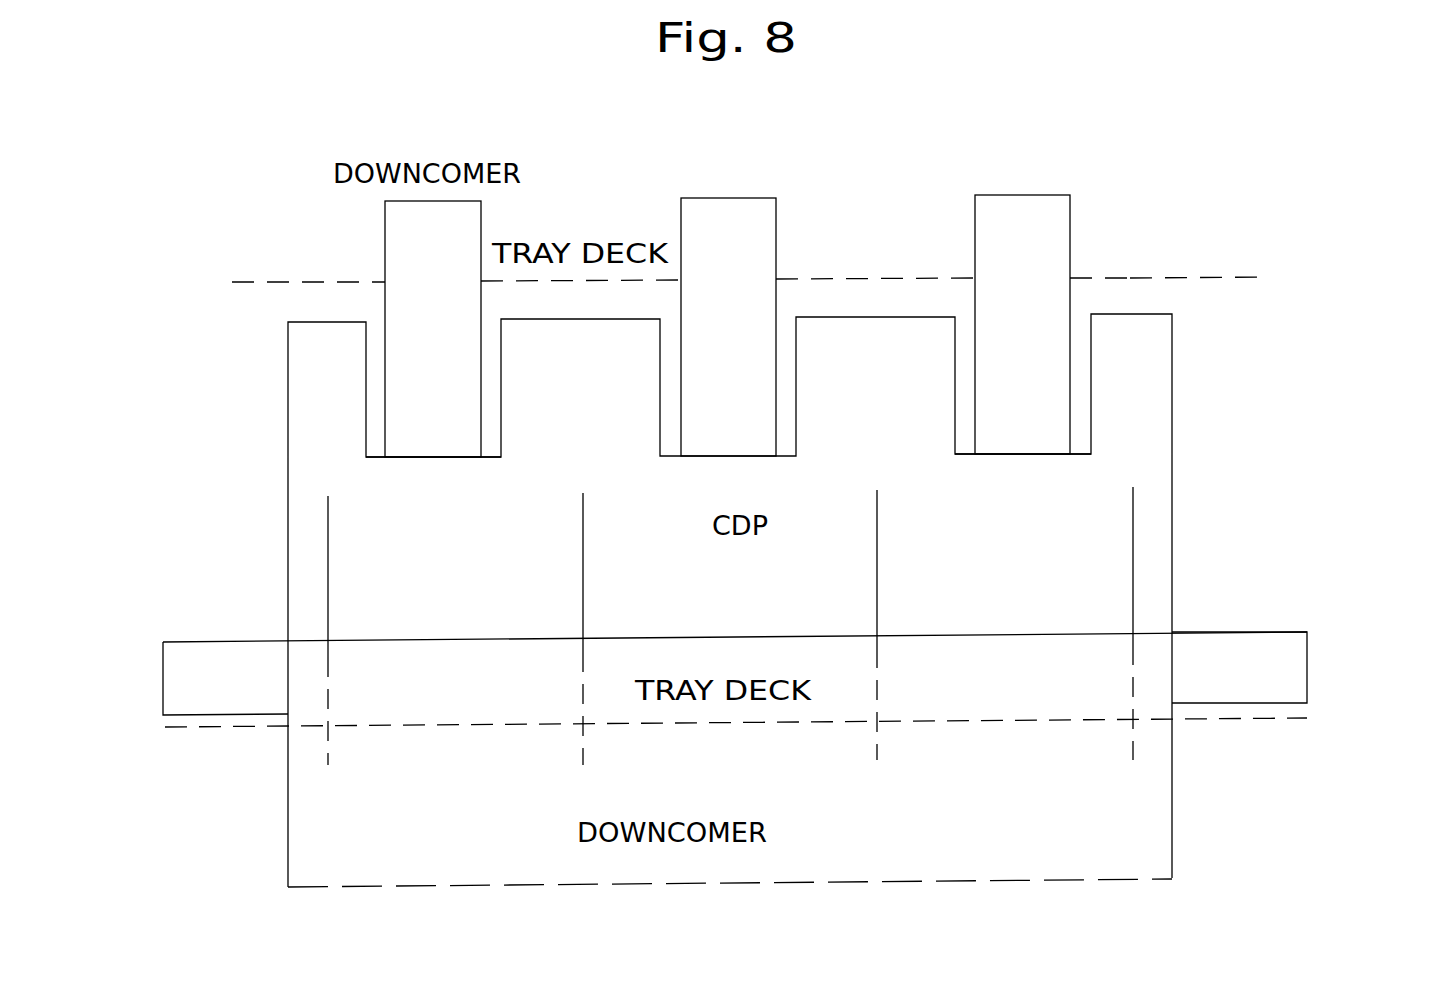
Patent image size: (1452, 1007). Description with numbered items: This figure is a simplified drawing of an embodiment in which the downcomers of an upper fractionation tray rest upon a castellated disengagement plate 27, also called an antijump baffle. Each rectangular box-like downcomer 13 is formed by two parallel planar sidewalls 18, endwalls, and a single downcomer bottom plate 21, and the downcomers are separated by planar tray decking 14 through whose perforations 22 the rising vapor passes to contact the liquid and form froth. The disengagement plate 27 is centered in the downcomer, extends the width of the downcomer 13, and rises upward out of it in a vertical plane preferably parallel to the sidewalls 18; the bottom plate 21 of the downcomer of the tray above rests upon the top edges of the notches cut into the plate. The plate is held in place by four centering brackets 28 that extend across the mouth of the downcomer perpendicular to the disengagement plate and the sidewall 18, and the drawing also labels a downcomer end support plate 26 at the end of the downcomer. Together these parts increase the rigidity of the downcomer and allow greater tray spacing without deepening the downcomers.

The downcomer 13 is at (481, 224).
The tray decking 14 is at (280, 282).
The downcomer sidewall 18 is at (1015, 822).
The downcomer bottom plate 21 is at (454, 457).
The decking perforations 22 is at (1243, 280).
The downcomer end support plate 26 is at (1195, 596).
The castellated disengagement plate 27 is at (762, 601).
The centering bracket 28 is at (328, 546).